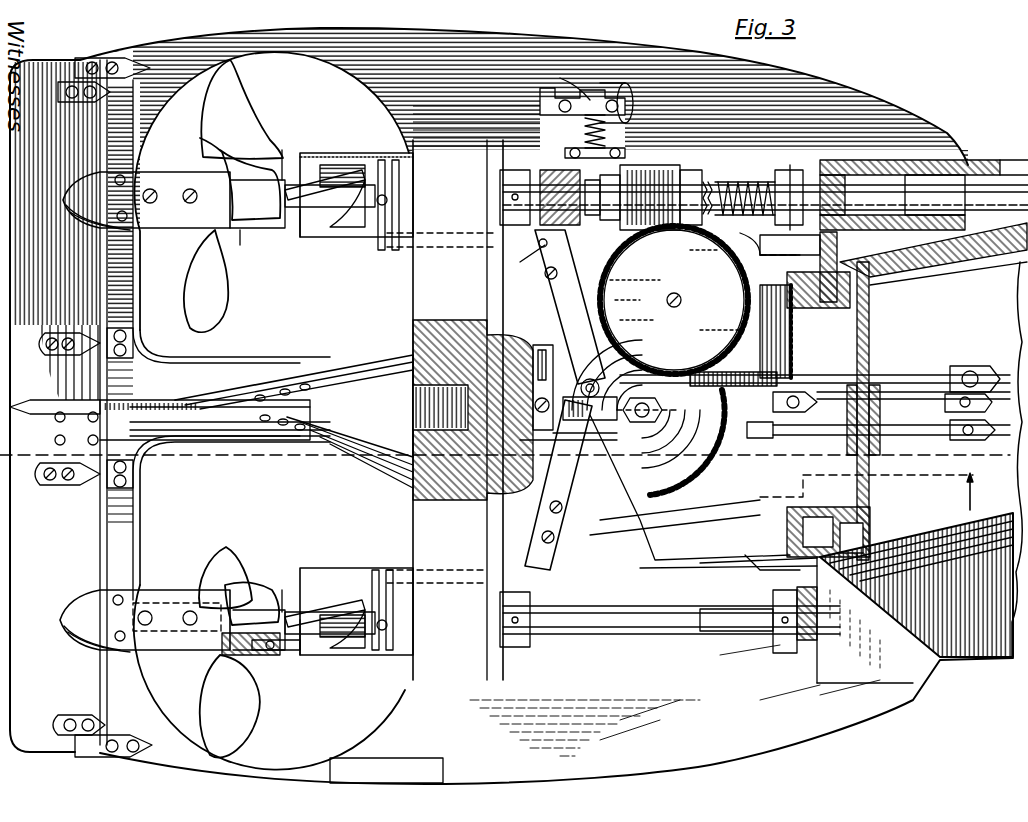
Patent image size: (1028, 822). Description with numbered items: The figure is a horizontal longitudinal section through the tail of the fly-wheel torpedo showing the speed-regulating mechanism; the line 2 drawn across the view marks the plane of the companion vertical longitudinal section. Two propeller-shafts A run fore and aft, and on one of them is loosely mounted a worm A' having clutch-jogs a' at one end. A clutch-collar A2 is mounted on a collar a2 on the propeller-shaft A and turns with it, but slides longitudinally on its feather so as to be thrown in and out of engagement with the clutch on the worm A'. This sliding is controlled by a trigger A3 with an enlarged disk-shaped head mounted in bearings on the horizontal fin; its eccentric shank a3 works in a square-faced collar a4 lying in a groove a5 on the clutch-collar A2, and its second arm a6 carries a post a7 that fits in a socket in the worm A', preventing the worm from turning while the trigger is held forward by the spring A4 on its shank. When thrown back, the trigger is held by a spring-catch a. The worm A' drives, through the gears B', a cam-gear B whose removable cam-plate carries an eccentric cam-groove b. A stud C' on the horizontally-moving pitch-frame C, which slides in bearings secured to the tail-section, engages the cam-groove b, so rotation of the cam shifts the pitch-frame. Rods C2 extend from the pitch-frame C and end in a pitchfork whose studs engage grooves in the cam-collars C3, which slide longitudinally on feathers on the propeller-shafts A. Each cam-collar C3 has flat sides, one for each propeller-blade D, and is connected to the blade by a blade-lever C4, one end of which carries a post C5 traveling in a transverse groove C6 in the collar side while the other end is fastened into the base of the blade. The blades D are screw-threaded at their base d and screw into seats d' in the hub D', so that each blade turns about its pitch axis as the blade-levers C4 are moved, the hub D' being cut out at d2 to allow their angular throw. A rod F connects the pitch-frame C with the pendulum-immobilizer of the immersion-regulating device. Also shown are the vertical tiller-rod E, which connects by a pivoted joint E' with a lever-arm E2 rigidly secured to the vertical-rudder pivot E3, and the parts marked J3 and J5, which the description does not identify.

The propeller-shafts A is at (764, 411).
The worm A' is at (797, 174).
The clutch-collar A2 is at (640, 165).
The trigger A3 is at (600, 92).
The spring A4 is at (585, 130).
The spring-catch a is at (565, 77).
The clutch-jogs a' is at (696, 170).
The collar a2 is at (670, 232).
The eccentric shank a3 is at (575, 178).
The square-faced collar a4 is at (520, 261).
The groove a5 is at (610, 218).
The second arm a6 is at (690, 168).
The post a7 is at (748, 178).
The cam-gear B is at (656, 417).
The gears B' is at (715, 302).
The cam-groove b is at (700, 512).
The pitch-frame C is at (633, 397).
The stud C' is at (483, 414).
The rods C2 is at (395, 200).
The cam-collars C3 is at (328, 163).
The blade-lever C4 is at (385, 190).
The post C5 is at (380, 165).
The transverse groove C6 is at (305, 240).
The propeller-blades D is at (171, 409).
The hub D' is at (222, 431).
The screw-threaded base d is at (276, 670).
The seats d' is at (282, 685).
The cut-out d2 is at (285, 160).
The tiller-rod E is at (766, 421).
The pivoted joint E' is at (473, 410).
The lever-arm E2 is at (540, 380).
The vertical-rudder pivot E3 is at (470, 490).
The rod connection F is at (925, 375).
The frame section J3 is at (945, 430).
The central shaft J5 is at (170, 477).
The section line 2 is at (979, 486).